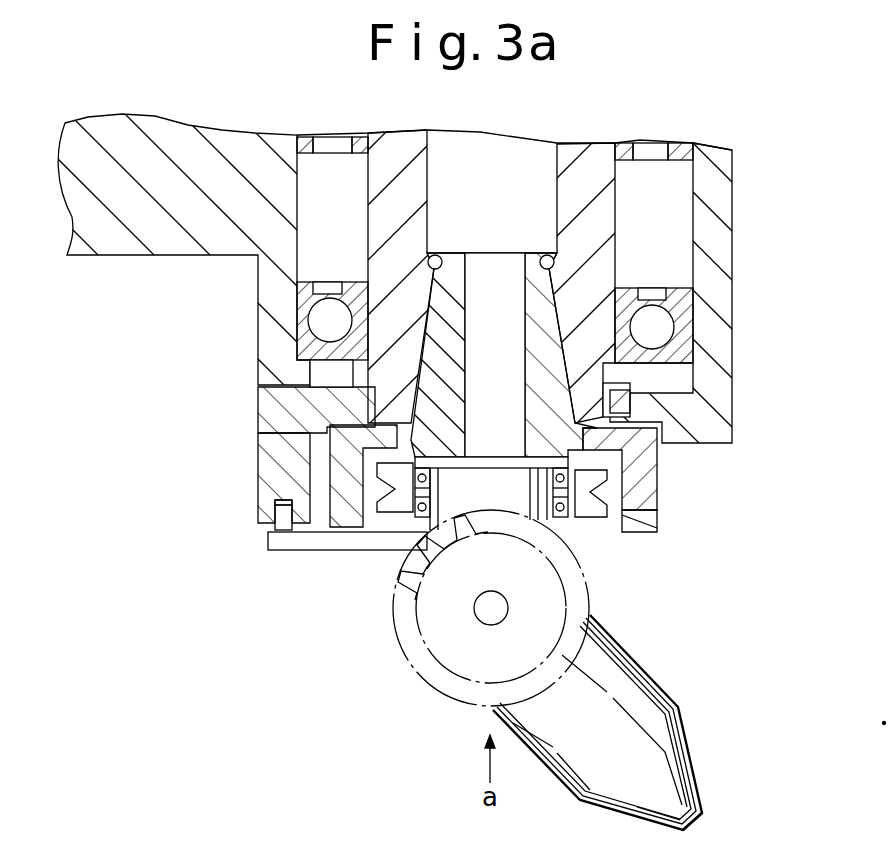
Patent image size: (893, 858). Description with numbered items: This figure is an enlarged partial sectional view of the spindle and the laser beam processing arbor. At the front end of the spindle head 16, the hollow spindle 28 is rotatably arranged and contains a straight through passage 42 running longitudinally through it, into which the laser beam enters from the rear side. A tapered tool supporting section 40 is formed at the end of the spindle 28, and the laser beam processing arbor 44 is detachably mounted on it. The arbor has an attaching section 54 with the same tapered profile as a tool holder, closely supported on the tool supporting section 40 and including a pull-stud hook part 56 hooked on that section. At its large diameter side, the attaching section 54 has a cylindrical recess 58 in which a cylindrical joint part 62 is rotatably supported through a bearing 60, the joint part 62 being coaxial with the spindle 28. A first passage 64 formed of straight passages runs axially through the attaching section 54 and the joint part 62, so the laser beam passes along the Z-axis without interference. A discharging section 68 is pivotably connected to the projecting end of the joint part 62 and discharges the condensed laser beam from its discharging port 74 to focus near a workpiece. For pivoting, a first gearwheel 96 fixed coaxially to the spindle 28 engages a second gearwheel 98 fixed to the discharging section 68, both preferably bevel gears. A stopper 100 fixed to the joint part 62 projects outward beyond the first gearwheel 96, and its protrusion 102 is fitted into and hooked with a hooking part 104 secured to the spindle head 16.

The spindle head 16 is at (262, 322).
The spindle 28 is at (617, 200).
The tool supporting section 40 is at (617, 272).
The straight through passage 42 is at (427, 163).
The laser beam processing arbor 44 is at (559, 674).
The attaching section 54 is at (550, 317).
The pull-stud hook part 56 is at (434, 255).
The cylindrical recess 58 is at (418, 508).
The bearing 60 is at (393, 510).
The joint part 62 is at (563, 528).
The first passage 64 is at (467, 332).
The discharging section 68 is at (647, 700).
The discharging port 74 is at (703, 820).
The first gearwheel 96 is at (645, 521).
The second gearwheel 98 is at (415, 660).
The stopper 100 is at (295, 555).
The protrusion 102 is at (270, 525).
The hooking part 104 is at (265, 475).